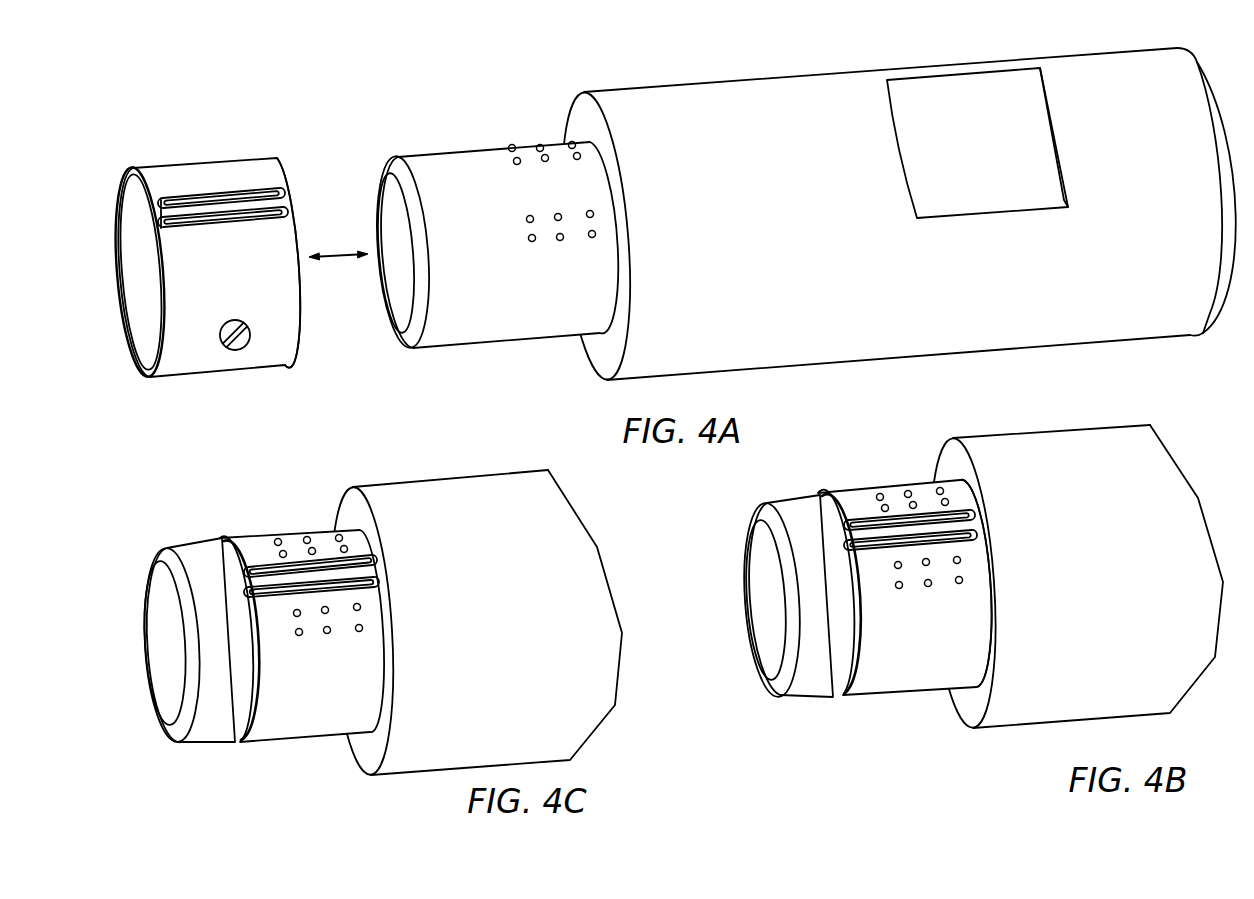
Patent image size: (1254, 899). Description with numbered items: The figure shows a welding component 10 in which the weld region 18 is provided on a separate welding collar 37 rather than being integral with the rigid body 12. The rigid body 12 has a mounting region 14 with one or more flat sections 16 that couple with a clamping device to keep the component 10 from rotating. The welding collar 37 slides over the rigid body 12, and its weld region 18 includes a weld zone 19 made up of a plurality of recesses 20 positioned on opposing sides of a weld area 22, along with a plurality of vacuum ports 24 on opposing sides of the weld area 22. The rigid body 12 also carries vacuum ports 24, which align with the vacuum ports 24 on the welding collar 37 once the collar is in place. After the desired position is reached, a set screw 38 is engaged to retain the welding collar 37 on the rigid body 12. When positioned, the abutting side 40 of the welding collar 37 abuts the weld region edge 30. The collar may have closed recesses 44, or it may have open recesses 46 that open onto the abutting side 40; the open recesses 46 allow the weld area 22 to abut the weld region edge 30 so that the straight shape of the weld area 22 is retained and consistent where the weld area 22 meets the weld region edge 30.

In FIG. 4A, the welding component 10 is at (696, 201).
In FIG. 4C, the welding component 10 is at (376, 611).
In FIG. 4B, the welding component 10 is at (980, 567).
In FIG. 4A, the rigid body 12 is at (433, 152).
In FIG. 4C, the rigid body 12 is at (182, 546).
In FIG. 4B, the rigid body 12 is at (787, 500).
In FIG. 4A, the mounting region 14 is at (614, 159).
In FIG. 4A, the flat section 16 is at (933, 96).
In FIG. 4A, the weld region 18 is at (257, 280).
In FIG. 4A, the weld zone 19 is at (160, 215).
In FIG. 4B, the weld zone 19 is at (848, 540).
In FIG. 4A, the recess 20 is at (281, 215).
In FIG. 4A, the weld area 22 is at (183, 212).
In FIG. 4C, the weld area 22 is at (270, 580).
In FIG. 4A, the vacuum port 24 is at (540, 146).
In FIG. 4C, the vacuum port 24 is at (343, 547).
In FIG. 4A, the weld region edge 30 is at (577, 118).
In FIG. 4C, the weld region edge 30 is at (370, 750).
In FIG. 4B, the weld region edge 30 is at (950, 460).
In FIG. 4A, the welding collar 37 is at (118, 285).
In FIG. 4C, the welding collar 37 is at (276, 745).
In FIG. 4B, the welding collar 37 is at (880, 696).
In FIG. 4A, the set screw 38 is at (222, 341).
In FIG. 4A, the abutting side 40 is at (293, 224).
In FIG. 4B, the abutting side 40 is at (972, 510).
In FIG. 4B, the closed recess 44 is at (864, 525).
In FIG. 4C, the open recess 46 is at (248, 581).